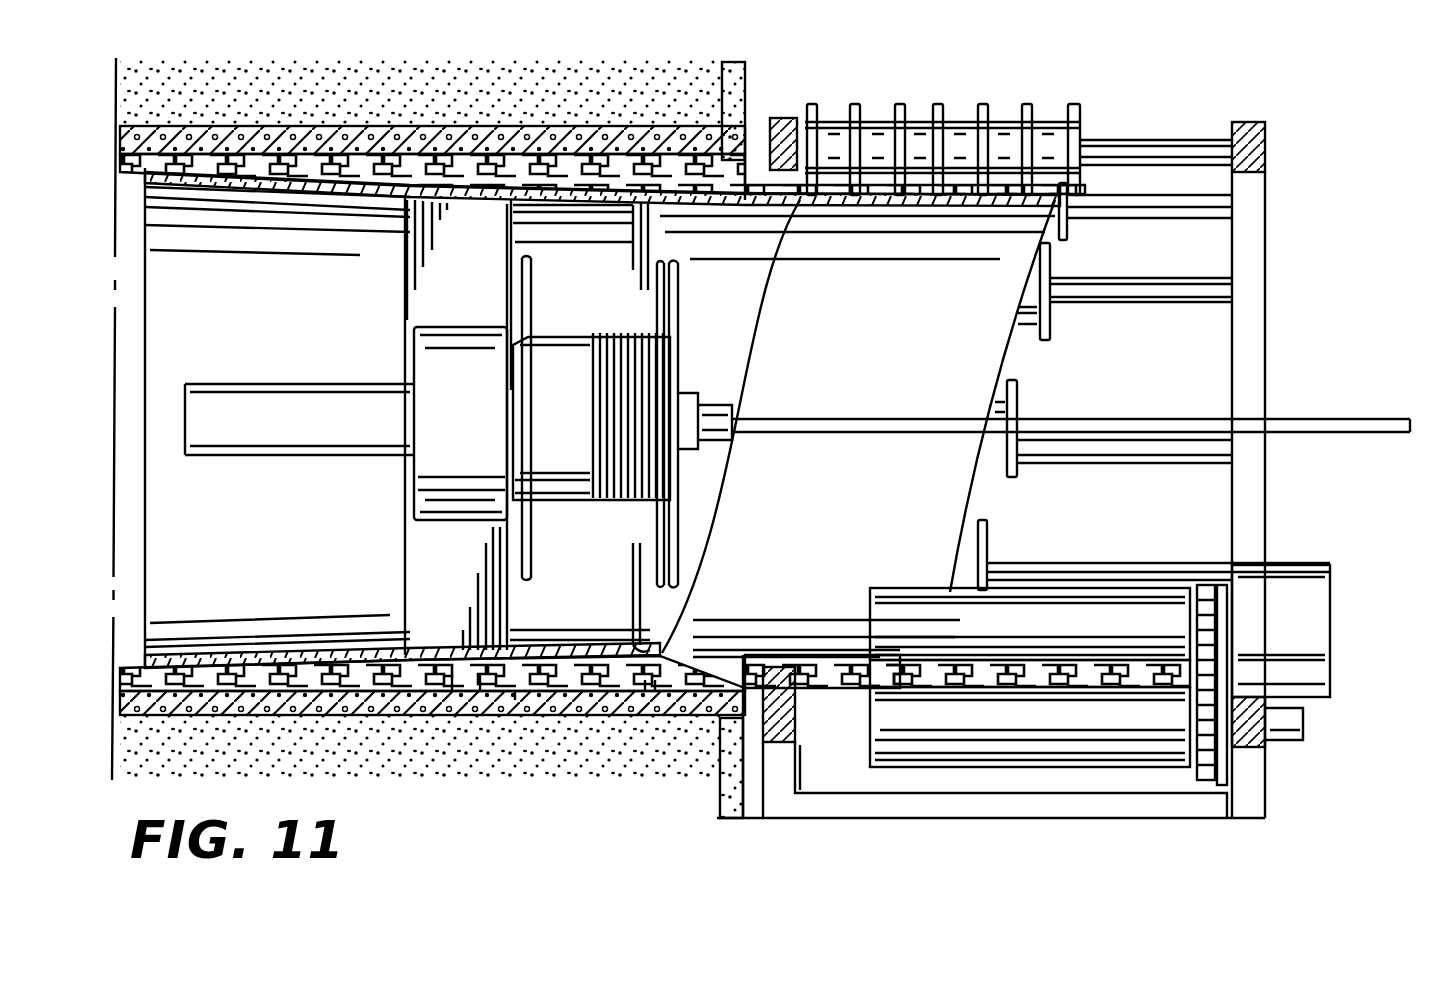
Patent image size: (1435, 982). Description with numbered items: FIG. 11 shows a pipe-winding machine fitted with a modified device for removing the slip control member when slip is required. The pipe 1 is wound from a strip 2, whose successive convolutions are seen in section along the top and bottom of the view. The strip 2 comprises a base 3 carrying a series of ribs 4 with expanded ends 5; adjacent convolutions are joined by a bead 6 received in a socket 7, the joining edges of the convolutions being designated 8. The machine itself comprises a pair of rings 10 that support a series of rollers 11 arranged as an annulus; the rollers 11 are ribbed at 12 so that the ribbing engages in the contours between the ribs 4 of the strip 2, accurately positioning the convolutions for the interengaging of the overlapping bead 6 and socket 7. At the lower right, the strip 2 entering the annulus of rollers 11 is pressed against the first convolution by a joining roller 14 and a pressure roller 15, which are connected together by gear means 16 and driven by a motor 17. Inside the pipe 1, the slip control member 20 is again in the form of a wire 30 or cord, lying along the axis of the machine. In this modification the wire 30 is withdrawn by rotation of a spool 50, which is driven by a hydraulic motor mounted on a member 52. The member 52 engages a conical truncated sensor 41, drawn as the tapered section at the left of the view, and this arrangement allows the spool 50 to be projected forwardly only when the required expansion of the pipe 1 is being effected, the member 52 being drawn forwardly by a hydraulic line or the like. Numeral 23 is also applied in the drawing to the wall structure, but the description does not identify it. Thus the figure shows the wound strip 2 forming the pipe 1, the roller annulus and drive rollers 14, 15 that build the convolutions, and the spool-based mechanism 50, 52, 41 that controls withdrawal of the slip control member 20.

The pipe 1 is at (814, 382).
The strip 2 is at (830, 705).
The base 3 is at (458, 680).
The ribs 4 is at (484, 680).
The expanded ends 5 is at (520, 695).
The bead 6 is at (650, 684).
The socket 7 is at (658, 684).
The joining edges 8 is at (265, 130).
The rings 10 is at (790, 118).
The rollers 11 is at (958, 138).
The ribbing 12 is at (905, 104).
The joining roller 14 is at (1000, 768).
The pressure roller 15 is at (1105, 592).
The gear means 16 is at (1206, 782).
The motor 17 is at (1285, 590).
The slip control member 20 is at (640, 482).
The concrete layer 23 is at (510, 128).
The wire 30 is at (663, 605).
The conical truncated sensor 41 is at (278, 185).
The spool 50 is at (573, 363).
The member 52 is at (464, 290).